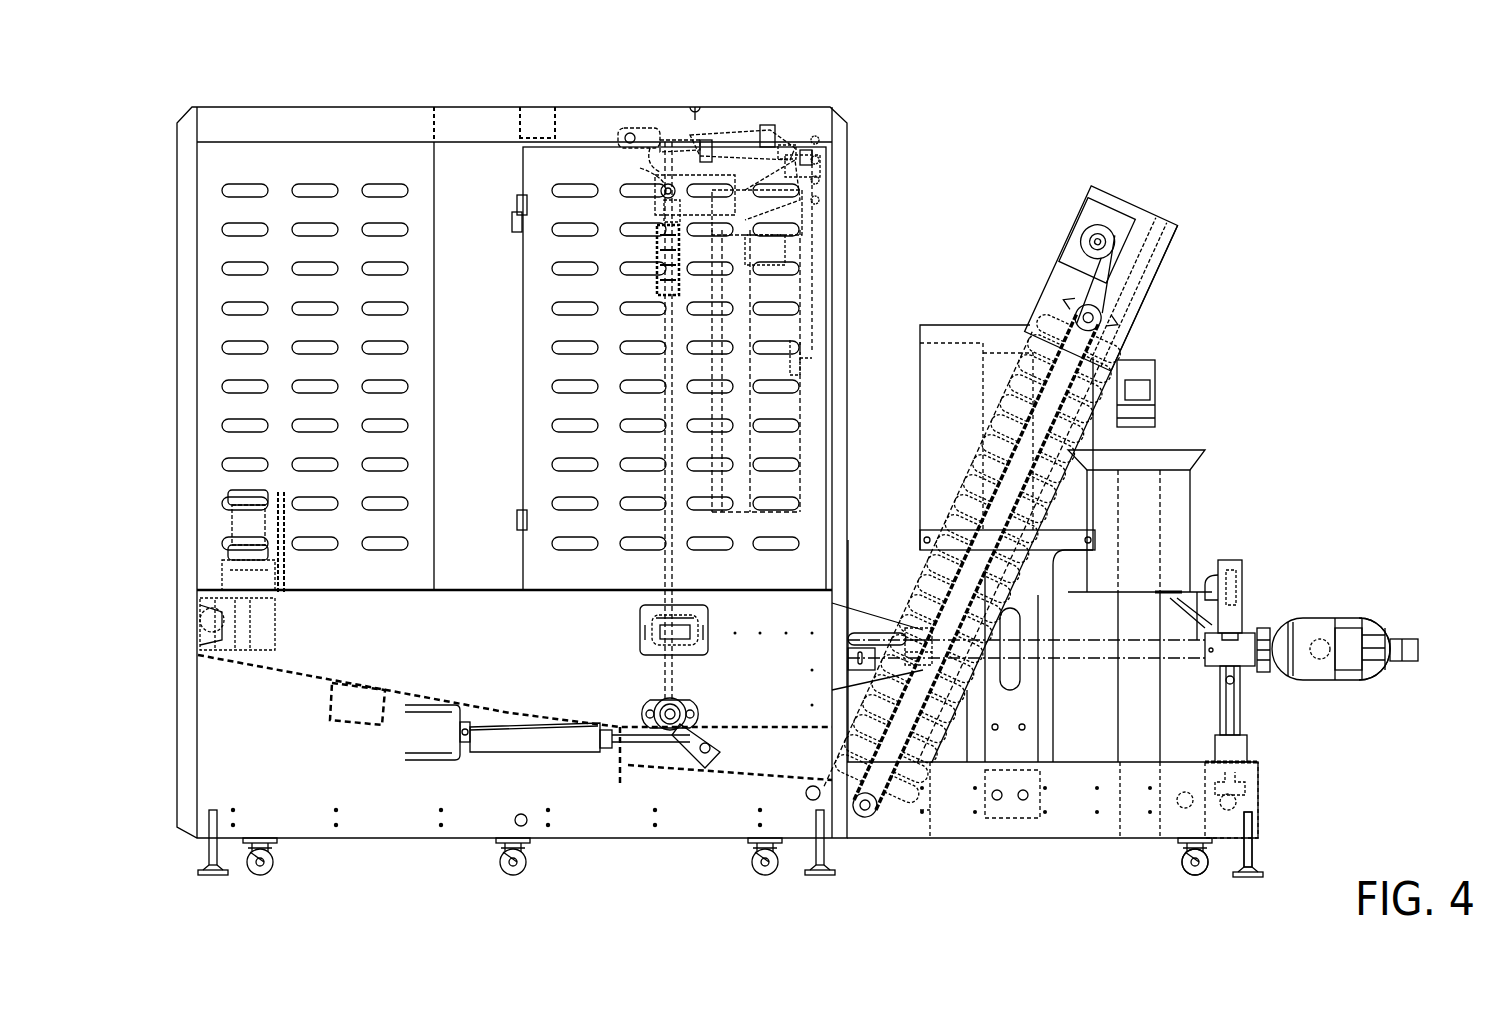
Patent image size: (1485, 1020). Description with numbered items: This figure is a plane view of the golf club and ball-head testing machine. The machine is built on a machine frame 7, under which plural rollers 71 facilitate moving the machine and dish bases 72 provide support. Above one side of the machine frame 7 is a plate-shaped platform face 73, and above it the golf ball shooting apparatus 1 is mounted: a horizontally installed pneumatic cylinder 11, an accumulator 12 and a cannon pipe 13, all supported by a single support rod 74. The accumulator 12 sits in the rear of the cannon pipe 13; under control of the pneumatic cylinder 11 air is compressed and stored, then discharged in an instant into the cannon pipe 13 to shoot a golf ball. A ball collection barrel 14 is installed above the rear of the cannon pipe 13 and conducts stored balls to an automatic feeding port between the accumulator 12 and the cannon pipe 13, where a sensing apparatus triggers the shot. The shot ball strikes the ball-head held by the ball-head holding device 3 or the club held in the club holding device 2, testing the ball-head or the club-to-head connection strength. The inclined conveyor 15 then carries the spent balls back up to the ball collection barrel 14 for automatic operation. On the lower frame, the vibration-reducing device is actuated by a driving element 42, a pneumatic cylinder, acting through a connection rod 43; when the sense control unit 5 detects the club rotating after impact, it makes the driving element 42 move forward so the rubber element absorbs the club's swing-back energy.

The golf ball shooting apparatus 1 is at (1318, 615).
The club holding device 2 is at (672, 140).
The ball-head holding device 3 is at (232, 566).
The sense control unit 5 is at (948, 332).
The machine frame 7 is at (1258, 795).
The pneumatic cylinder 11 is at (1398, 658).
The accumulator 12 is at (1368, 625).
The cannon pipe 13 is at (1187, 647).
The ball collection barrel 14 is at (1178, 497).
The conveyor 15 is at (935, 598).
The driving element 42 is at (520, 745).
The connection rod 43 is at (698, 725).
The rollers 71 is at (1188, 870).
The dish bases 72 is at (1255, 875).
The platform face 73 is at (1250, 762).
The support rod 74 is at (1242, 705).